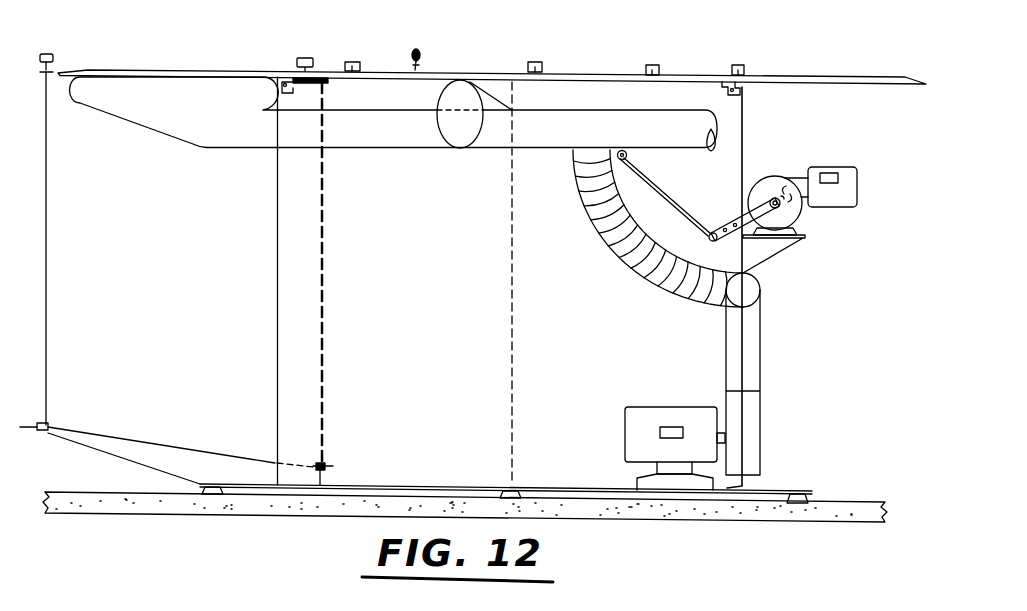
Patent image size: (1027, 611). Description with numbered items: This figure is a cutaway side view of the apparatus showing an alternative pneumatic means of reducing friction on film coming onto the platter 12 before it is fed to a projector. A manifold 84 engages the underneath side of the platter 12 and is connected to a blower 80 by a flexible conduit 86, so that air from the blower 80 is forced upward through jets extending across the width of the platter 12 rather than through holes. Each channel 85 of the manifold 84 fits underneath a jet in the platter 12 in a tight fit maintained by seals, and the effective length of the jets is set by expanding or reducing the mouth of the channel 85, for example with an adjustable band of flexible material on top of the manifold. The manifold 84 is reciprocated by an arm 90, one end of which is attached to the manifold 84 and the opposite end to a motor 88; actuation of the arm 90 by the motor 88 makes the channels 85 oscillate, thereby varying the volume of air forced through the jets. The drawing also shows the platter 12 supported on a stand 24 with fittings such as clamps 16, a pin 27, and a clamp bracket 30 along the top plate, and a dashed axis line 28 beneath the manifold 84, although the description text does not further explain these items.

The platter 12 is at (840, 85).
The clamps 16 is at (352, 61).
The stand 24 is at (47, 53).
The pin 27 is at (412, 52).
The dashed line of pivot axis 28 is at (325, 271).
The clamp bracket 30 is at (305, 57).
The blower 80 is at (632, 432).
The manifold 84 is at (393, 132).
The channel 85 is at (162, 107).
The flexible conduit 86 is at (640, 268).
The motor 88 is at (770, 177).
The arm 90 is at (660, 191).